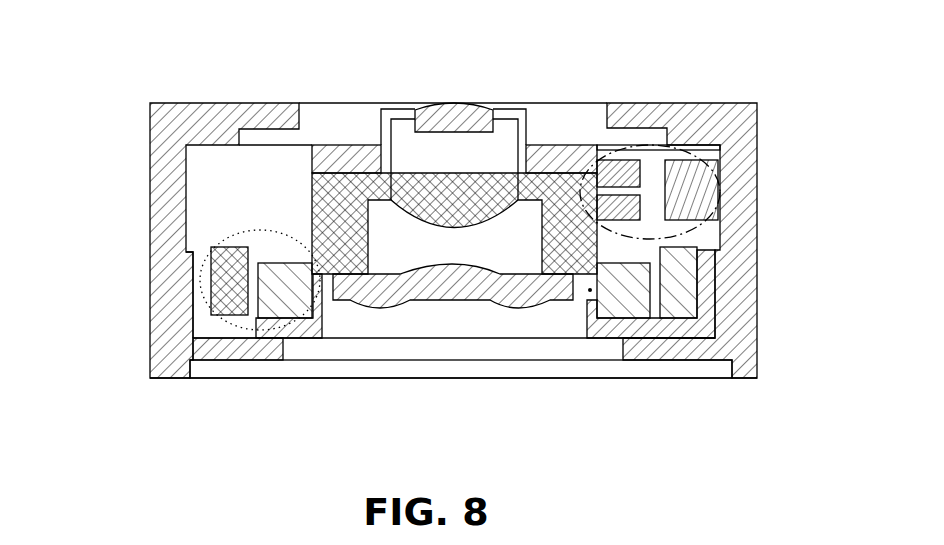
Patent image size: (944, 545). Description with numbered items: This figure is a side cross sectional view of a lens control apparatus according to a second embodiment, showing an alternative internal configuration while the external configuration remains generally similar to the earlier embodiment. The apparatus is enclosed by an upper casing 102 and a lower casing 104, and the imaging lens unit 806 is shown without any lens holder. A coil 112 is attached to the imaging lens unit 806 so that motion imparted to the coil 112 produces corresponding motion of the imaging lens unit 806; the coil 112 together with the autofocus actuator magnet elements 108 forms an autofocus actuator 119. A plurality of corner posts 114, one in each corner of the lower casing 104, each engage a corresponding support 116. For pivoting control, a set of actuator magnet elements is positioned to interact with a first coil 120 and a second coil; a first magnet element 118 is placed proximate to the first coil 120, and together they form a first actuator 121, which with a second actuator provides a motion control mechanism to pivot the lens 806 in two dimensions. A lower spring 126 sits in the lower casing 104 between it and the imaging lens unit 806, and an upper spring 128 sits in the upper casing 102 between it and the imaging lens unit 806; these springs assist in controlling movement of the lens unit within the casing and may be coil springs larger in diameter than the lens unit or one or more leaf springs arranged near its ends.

The upper casing 102 is at (173, 104).
The lower casing 104 is at (670, 363).
The autofocus actuator magnet elements 108 is at (225, 288).
The coil 112 is at (278, 297).
The corner posts 114 is at (167, 355).
The support 116 is at (195, 252).
The first magnet element 118 is at (703, 203).
The autofocus actuator 119 is at (230, 235).
The first coil 120 is at (617, 175).
The first actuator 121 is at (722, 153).
The lower spring 126 is at (653, 337).
The upper spring 128 is at (600, 147).
The imaging lens unit 806 is at (503, 113).